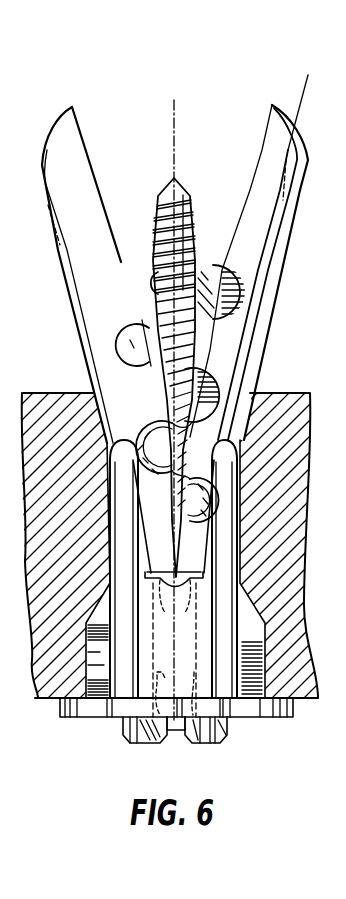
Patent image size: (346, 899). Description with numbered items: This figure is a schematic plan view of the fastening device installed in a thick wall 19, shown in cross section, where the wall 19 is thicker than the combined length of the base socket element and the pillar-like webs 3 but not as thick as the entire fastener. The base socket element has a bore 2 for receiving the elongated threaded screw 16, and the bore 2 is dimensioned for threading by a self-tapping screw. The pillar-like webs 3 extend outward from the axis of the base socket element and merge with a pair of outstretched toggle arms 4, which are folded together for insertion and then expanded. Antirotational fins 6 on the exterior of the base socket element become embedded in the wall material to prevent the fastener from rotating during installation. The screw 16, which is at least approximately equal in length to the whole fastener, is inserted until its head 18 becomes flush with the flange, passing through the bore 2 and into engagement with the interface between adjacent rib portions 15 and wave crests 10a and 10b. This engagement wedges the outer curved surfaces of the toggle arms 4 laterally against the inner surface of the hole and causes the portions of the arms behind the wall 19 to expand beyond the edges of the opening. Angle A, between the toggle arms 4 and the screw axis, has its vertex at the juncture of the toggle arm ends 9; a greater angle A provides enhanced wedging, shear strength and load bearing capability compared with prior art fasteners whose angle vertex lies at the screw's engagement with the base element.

The bore 2 is at (147, 748).
The pillar-like webs 3 is at (230, 483).
The toggle arms 4 is at (47, 216).
The antirotational fins 6 is at (98, 703).
The toggle arm ends 9 is at (174, 648).
The wave crests 10a is at (218, 263).
The wave crests 10b is at (140, 273).
The rib portions 15 is at (130, 347).
The elongated threaded screw 16 is at (176, 178).
The head 18 is at (200, 743).
The wall 19 is at (297, 540).
The angle A is at (180, 542).